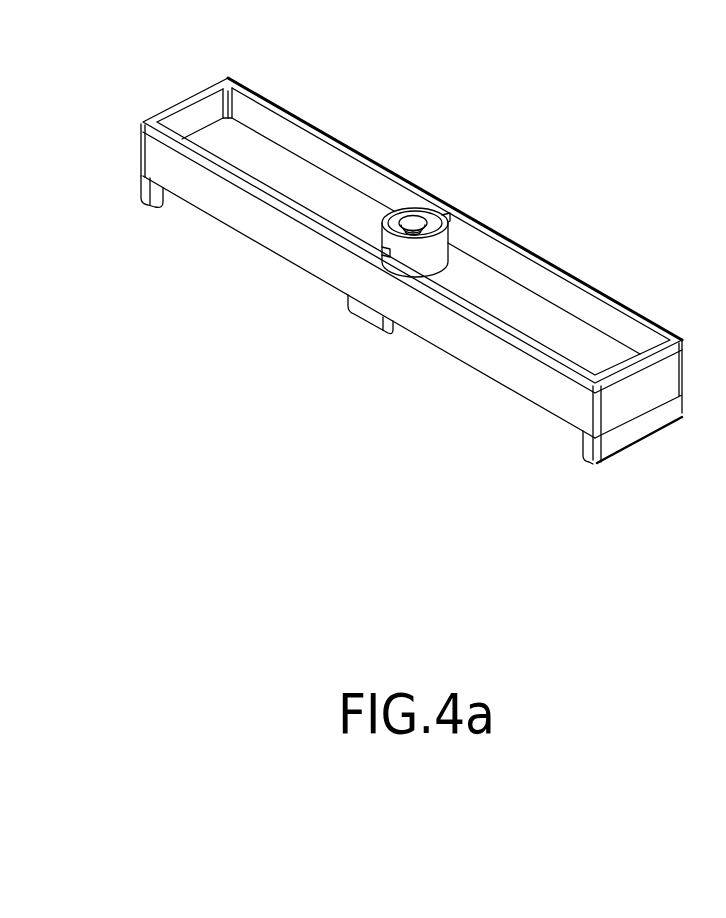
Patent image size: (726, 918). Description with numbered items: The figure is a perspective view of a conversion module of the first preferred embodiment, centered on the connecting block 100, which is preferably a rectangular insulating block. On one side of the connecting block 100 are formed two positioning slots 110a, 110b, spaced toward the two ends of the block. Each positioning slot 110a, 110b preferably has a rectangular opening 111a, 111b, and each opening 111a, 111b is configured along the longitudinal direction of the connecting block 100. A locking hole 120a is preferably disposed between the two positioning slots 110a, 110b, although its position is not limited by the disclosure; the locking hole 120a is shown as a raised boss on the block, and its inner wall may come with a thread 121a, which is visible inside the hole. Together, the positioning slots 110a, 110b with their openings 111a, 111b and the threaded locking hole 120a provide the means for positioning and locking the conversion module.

The connecting block 100 is at (436, 41).
The positioning slot 110a is at (277, 267).
The positioning slot 110b is at (507, 400).
The rectangular opening 111a is at (163, 205).
The rectangular opening 111b is at (394, 331).
The locking hole 120a is at (426, 214).
The thread 121a is at (412, 215).